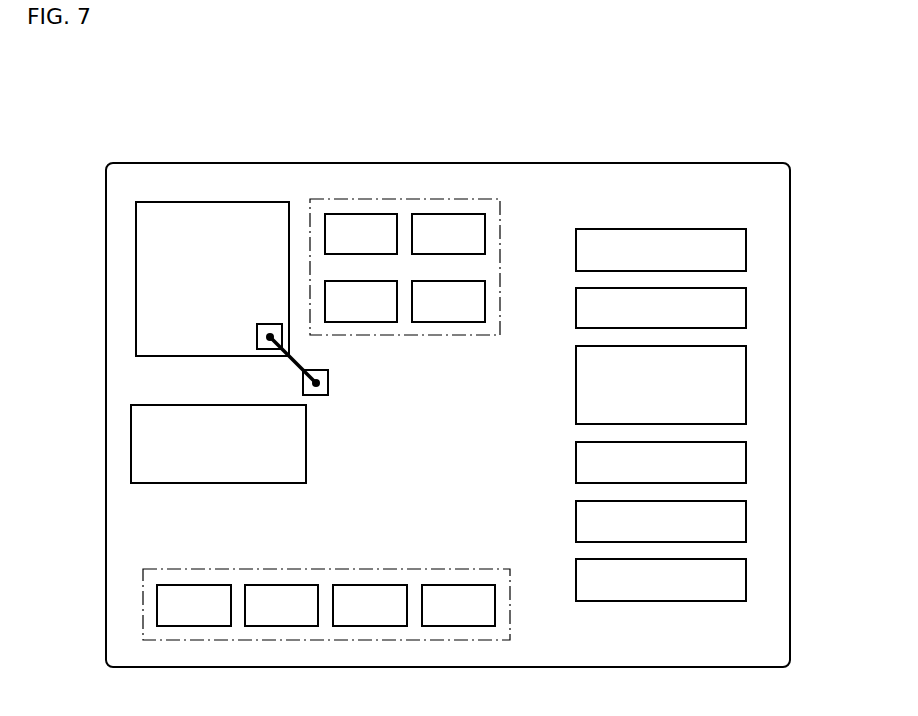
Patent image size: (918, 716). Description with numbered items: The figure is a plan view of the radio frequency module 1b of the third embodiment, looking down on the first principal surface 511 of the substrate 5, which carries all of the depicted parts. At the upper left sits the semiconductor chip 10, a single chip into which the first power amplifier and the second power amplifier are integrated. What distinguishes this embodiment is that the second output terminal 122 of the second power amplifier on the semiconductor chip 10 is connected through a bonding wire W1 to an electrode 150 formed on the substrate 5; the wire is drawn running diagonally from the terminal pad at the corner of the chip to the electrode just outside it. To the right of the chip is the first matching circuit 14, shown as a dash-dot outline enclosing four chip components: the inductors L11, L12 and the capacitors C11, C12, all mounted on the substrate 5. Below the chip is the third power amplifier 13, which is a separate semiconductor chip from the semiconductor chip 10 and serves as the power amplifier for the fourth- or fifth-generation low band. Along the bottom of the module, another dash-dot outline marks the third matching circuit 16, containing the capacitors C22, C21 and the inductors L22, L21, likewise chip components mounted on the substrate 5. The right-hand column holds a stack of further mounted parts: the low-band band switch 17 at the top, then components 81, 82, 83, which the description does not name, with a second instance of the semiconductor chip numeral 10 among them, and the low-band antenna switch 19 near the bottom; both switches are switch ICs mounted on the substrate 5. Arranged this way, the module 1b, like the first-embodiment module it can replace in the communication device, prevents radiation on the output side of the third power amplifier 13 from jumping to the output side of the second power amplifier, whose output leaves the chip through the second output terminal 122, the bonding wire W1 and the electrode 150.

The radio frequency module 1b is at (728, 124).
The substrate 5 is at (764, 160).
The first principal surface 511 is at (597, 193).
The semiconductor chip 10 is at (186, 350).
The second output terminal 122 is at (261, 323).
The electrode 150 is at (329, 393).
The bonding wire W1 is at (291, 362).
The first matching circuit 14 is at (501, 210).
The capacitor C11 is at (367, 228).
The capacitor C12 is at (462, 310).
The inductor L11 is at (376, 309).
The inductor L12 is at (472, 232).
The low-band band switch 17 is at (652, 243).
The electronic component 81 is at (587, 307).
The electronic component 82 is at (580, 460).
The electronic component 83 is at (582, 519).
The low-band antenna switch 19 is at (584, 578).
The third power amplifier 13 is at (300, 447).
The third matching circuit 16 is at (511, 618).
The capacitor C21 is at (372, 590).
The capacitor C22 is at (194, 588).
The inductor L21 is at (465, 588).
The inductor L22 is at (288, 588).